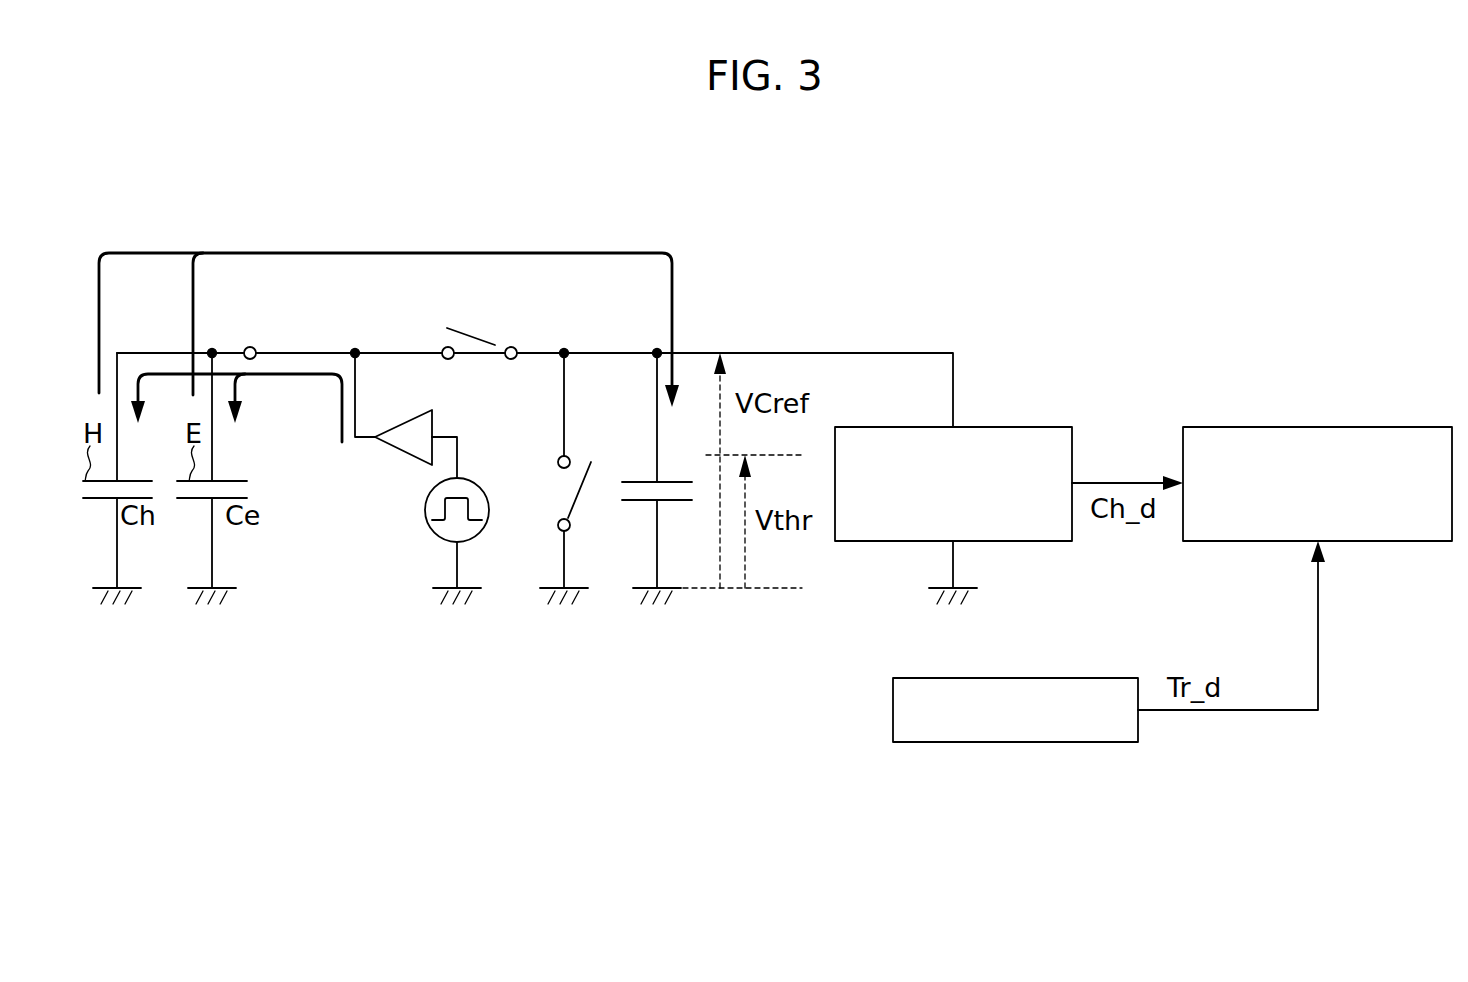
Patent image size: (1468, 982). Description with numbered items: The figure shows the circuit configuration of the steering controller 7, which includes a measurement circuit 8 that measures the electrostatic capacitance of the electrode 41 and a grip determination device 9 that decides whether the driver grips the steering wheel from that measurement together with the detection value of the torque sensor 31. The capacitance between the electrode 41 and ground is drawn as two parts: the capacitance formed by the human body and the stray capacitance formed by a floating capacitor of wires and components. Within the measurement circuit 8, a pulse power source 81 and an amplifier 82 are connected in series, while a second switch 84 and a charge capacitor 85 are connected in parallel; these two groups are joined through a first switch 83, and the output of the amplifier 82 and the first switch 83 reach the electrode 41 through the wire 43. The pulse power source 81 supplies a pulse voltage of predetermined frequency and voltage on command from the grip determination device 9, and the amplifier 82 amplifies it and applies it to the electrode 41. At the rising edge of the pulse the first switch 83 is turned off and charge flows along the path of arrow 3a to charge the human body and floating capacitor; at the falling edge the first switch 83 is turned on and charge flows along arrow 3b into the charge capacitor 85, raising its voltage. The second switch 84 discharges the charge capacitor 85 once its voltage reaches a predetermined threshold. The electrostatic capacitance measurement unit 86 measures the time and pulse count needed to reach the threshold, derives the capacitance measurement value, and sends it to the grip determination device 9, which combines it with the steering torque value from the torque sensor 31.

The arrow 3a is at (302, 374).
The arrow 3b is at (253, 253).
The steering controller 7 is at (1238, 162).
The measurement circuit 8 is at (906, 270).
The grip determination device 9 is at (1325, 427).
The torque sensor 31 is at (1105, 689).
The electrode 41 is at (251, 347).
The wire 43 is at (292, 353).
The pulse power source 81 is at (468, 483).
The amplifier 82 is at (400, 431).
The first switch 83 is at (461, 329).
The second switch 84 is at (574, 492).
The charge capacitor 85 is at (626, 482).
The electrostatic capacitance measurement unit 86 is at (1031, 427).